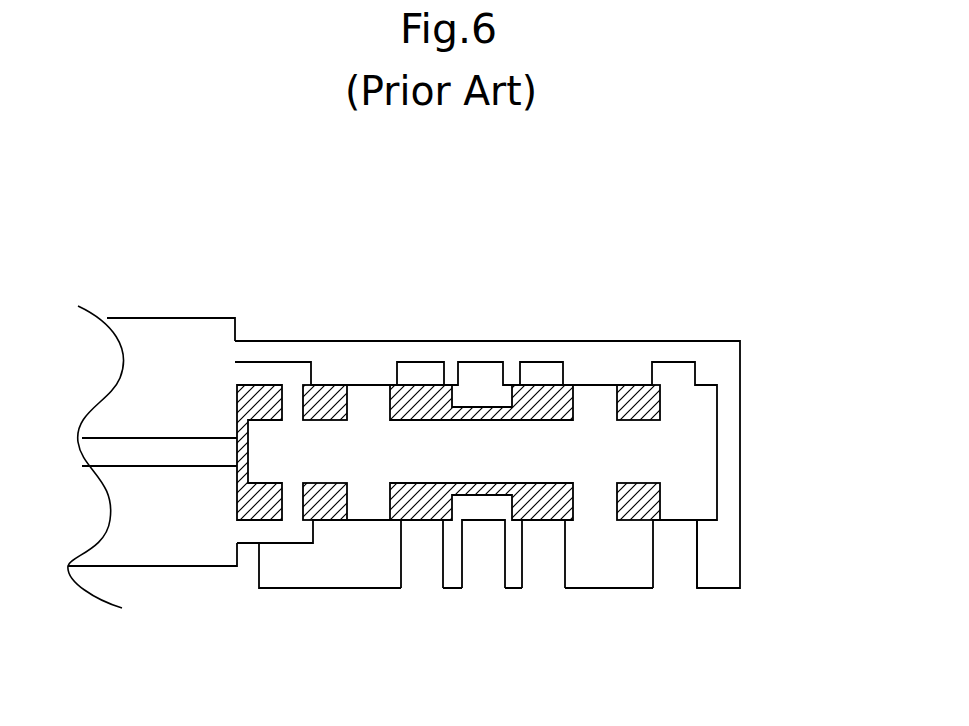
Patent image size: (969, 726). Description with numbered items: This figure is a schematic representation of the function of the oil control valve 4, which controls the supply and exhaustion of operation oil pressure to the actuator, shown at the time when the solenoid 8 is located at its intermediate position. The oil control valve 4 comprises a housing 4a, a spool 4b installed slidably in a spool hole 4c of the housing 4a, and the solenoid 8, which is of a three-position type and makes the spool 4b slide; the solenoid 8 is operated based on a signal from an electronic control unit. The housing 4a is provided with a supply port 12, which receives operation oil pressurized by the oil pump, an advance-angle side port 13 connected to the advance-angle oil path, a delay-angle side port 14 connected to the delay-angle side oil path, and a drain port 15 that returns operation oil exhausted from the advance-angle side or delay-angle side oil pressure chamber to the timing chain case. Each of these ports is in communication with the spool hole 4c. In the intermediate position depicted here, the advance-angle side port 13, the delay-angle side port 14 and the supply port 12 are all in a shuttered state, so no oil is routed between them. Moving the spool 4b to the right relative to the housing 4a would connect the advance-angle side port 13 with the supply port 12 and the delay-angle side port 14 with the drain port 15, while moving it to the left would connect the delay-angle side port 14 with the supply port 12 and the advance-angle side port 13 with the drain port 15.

The oil control valve 4 is at (539, 394).
The housing 4a is at (604, 366).
The spool 4b is at (333, 372).
The spool hole 4c is at (701, 453).
The solenoid 8 is at (180, 580).
The supply port 12 is at (483, 583).
The advance-angle side port 13 is at (548, 581).
The delay-angle side port 14 is at (427, 585).
The drain port 15 is at (679, 583).